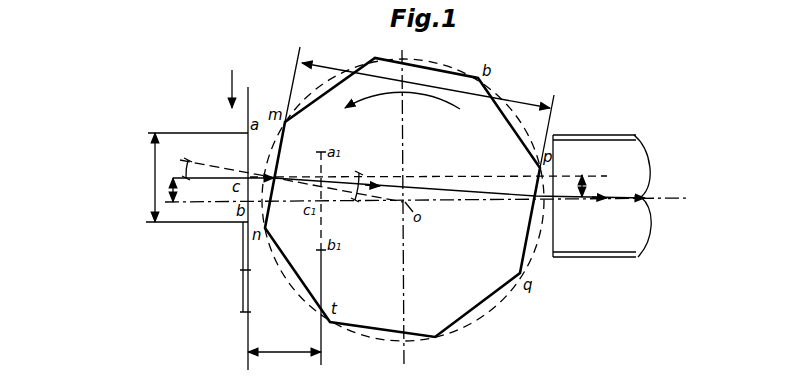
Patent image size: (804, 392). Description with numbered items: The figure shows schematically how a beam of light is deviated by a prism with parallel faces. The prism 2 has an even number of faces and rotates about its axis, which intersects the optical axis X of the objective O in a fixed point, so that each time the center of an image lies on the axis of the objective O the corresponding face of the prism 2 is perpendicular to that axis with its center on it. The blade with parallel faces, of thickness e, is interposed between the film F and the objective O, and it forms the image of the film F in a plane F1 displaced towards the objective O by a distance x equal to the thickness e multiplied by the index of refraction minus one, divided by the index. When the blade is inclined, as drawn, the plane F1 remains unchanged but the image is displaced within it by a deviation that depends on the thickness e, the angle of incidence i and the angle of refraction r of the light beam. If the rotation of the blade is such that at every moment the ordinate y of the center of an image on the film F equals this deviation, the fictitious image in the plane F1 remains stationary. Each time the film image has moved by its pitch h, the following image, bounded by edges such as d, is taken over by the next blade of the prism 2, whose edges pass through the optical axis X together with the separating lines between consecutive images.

The prism 2 is at (465, 282).
The objective O is at (613, 245).
The optical axis X is at (427, 205).
The film F is at (238, 228).
The image plane F1 is at (328, 258).
The image edge d is at (251, 269).
The pitch h is at (191, 177).
The thickness of the blade e is at (426, 85).
The displacement distance x is at (284, 343).
The ordinate y is at (165, 190).
The angle of incidence i is at (184, 169).
The angle of refraction r is at (360, 180).